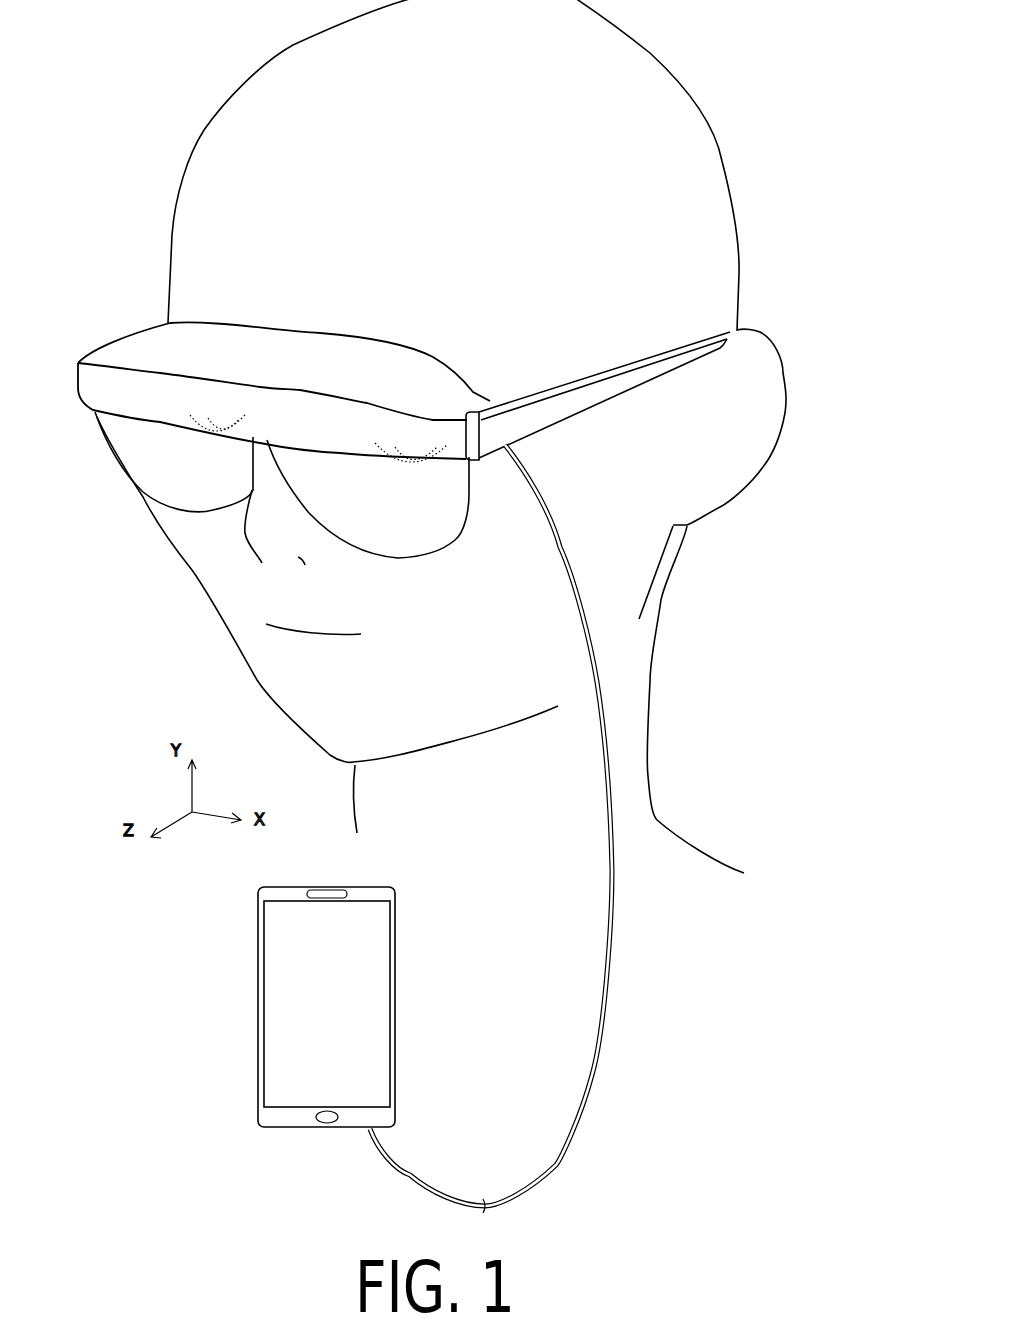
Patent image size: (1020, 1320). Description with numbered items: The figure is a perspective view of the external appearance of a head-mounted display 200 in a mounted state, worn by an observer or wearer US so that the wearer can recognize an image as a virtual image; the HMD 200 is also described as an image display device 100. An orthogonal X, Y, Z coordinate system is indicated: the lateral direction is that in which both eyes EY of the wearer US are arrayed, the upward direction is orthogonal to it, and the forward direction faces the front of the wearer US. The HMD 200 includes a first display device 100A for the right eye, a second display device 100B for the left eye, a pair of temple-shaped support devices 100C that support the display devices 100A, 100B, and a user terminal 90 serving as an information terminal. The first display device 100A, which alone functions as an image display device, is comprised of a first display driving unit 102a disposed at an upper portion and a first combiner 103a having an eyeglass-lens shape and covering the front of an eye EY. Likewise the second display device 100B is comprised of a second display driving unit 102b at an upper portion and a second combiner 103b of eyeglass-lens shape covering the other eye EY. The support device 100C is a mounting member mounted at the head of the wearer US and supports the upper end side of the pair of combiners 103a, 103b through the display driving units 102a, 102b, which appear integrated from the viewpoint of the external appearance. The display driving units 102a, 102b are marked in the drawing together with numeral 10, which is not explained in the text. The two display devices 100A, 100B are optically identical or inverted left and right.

The observer or wearer US is at (722, 158).
The head-mounted display 200 is at (380, 259).
The image display device 100 is at (401, 697).
The optical unit 10 is at (303, 341).
The first display device 100A is at (206, 315).
The second display device 100B is at (401, 327).
The support device 100C is at (627, 370).
The first display driving unit 102a is at (157, 340).
The second display driving unit 102b is at (415, 368).
The first combiner 103a is at (198, 502).
The second combiner 103b is at (423, 547).
The eyes EY is at (213, 433).
The user terminal 90 is at (288, 994).